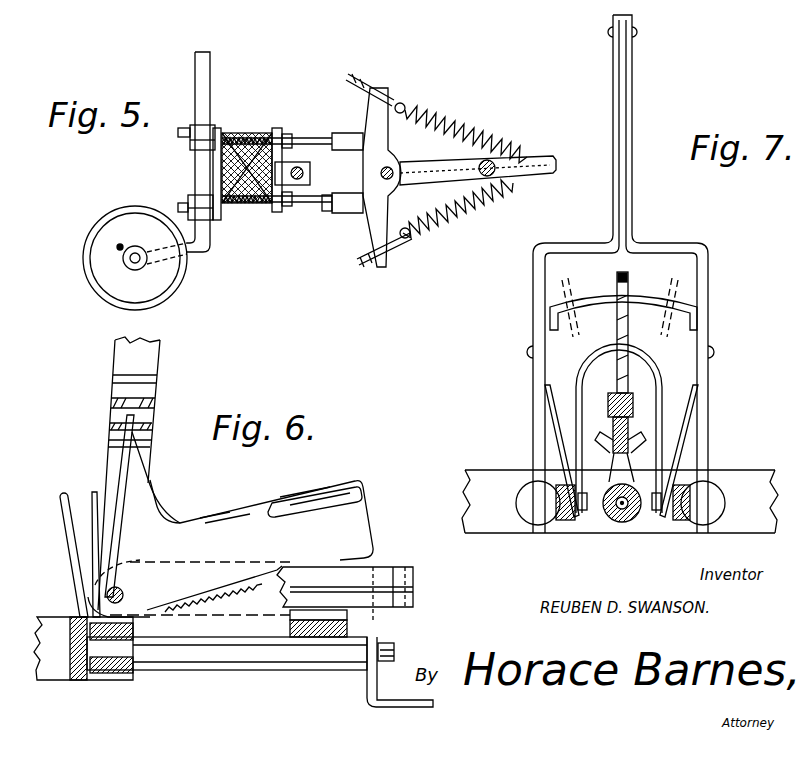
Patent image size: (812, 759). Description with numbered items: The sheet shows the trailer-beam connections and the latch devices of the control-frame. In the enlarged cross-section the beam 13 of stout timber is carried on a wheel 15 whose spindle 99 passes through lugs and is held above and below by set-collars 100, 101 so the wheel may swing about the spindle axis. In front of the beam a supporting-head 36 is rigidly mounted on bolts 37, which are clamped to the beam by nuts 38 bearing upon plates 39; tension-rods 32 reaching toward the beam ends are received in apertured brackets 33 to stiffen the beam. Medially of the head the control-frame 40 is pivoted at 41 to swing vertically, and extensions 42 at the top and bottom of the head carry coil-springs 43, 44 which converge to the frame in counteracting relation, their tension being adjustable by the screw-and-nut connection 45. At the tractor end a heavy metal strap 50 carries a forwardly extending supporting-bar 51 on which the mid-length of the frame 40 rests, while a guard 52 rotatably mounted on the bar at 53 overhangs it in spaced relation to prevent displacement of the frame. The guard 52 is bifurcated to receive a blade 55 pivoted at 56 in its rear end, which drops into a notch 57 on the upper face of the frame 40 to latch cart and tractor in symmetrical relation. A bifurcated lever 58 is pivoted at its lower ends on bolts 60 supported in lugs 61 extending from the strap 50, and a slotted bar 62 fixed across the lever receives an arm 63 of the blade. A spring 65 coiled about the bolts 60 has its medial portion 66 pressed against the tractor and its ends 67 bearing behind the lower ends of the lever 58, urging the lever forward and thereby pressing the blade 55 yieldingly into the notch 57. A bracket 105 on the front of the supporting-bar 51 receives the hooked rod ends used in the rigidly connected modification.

In FIG. 5, the beam 13 is at (262, 205).
In FIG. 5, the wheels 15 is at (110, 288).
In FIG. 5, the tension-rods 32 is at (300, 167).
In FIG. 5, the apertured brackets 33 is at (336, 212).
In FIG. 5, the supporting-head 36 is at (368, 160).
In FIG. 5, the bolts 37 is at (300, 137).
In FIG. 5, the nuts 38 is at (278, 131).
In FIG. 5, the plates 39 is at (221, 140).
In FIG. 5, the control-frame 40 is at (540, 172).
In FIG. 6, the control-frame 40 is at (347, 633).
In FIG. 5, the pivot 41 is at (392, 170).
In FIG. 5, the extensions 42 is at (382, 110).
In FIG. 5, the coil-spring 43 is at (470, 128).
In FIG. 5, the coil-spring 44 is at (457, 220).
In FIG. 5, the screw-and-nut connection 45 is at (382, 85).
In FIG. 6, the strap 50 is at (72, 672).
In FIG. 7, the strap 50 is at (504, 524).
In FIG. 6, the supporting-bar 51 is at (240, 662).
In FIG. 7, the supporting-bar 51 is at (623, 523).
In FIG. 6, the guard 52 is at (390, 579).
In FIG. 7, the guard 52 is at (608, 427).
In FIG. 6, the guard mounting 53 is at (130, 677).
In FIG. 6, the blade 55 is at (350, 536).
In FIG. 7, the blade 55 is at (612, 458).
In FIG. 6, the pivot 56 is at (106, 595).
In FIG. 6, the notch 57 is at (322, 622).
In FIG. 6, the bifurcated lever 58 is at (149, 356).
In FIG. 7, the bifurcated lever 58 is at (708, 421).
In FIG. 7, the bolts 60 is at (655, 519).
In FIG. 7, the lugs 61 is at (695, 496).
In FIG. 6, the slotted bar 62 is at (149, 424).
In FIG. 7, the slotted bar 62 is at (638, 298).
In FIG. 6, the arm 63 is at (149, 448).
In FIG. 7, the arm 63 is at (624, 332).
In FIG. 7, the spring 65 is at (572, 519).
In FIG. 6, the medial portion 66 is at (68, 531).
In FIG. 7, the medial portion 66 is at (650, 359).
In FIG. 6, the spring ends 67 is at (92, 522).
In FIG. 7, the spring ends 67 is at (549, 390).
In FIG. 5, the spindle 99 is at (204, 97).
In FIG. 5, the upper set-collar 100 is at (192, 133).
In FIG. 5, the lower set-collar 101 is at (190, 207).
In FIG. 6, the bracket 105 is at (398, 703).